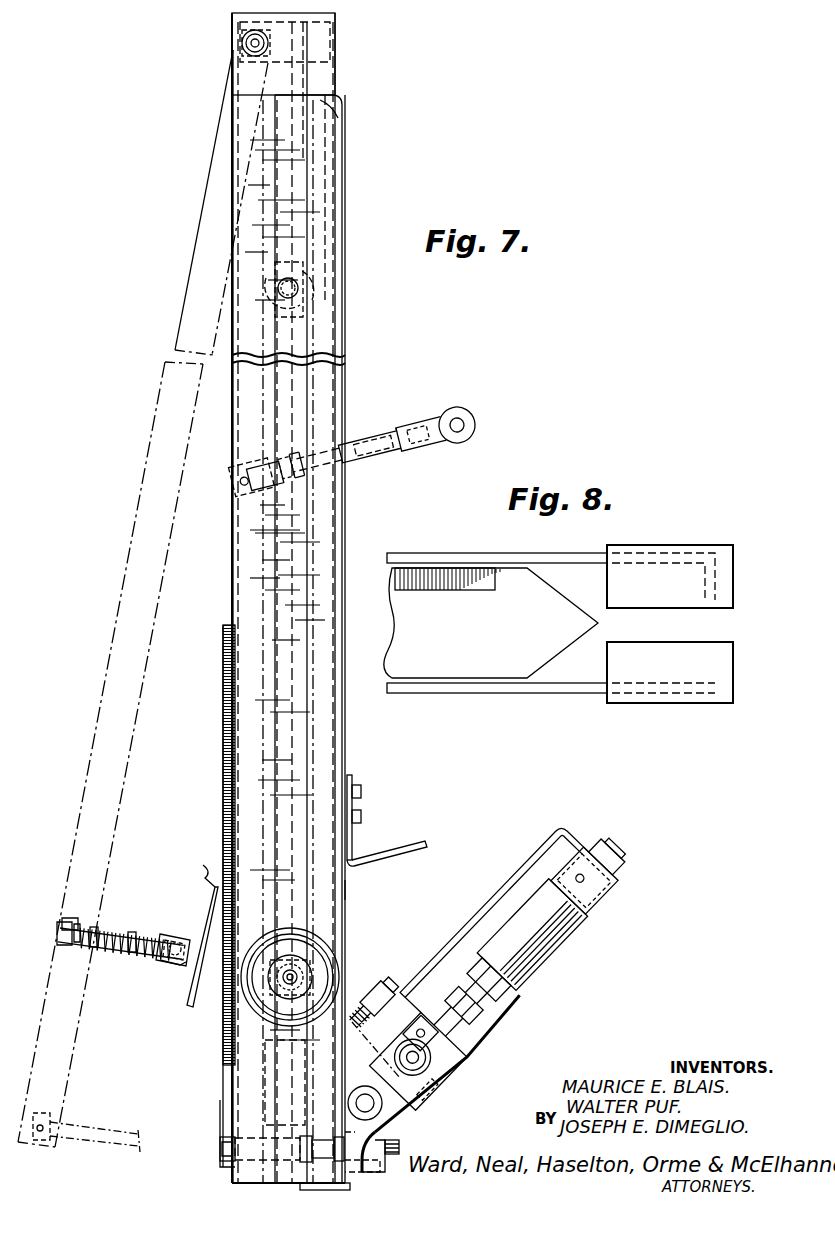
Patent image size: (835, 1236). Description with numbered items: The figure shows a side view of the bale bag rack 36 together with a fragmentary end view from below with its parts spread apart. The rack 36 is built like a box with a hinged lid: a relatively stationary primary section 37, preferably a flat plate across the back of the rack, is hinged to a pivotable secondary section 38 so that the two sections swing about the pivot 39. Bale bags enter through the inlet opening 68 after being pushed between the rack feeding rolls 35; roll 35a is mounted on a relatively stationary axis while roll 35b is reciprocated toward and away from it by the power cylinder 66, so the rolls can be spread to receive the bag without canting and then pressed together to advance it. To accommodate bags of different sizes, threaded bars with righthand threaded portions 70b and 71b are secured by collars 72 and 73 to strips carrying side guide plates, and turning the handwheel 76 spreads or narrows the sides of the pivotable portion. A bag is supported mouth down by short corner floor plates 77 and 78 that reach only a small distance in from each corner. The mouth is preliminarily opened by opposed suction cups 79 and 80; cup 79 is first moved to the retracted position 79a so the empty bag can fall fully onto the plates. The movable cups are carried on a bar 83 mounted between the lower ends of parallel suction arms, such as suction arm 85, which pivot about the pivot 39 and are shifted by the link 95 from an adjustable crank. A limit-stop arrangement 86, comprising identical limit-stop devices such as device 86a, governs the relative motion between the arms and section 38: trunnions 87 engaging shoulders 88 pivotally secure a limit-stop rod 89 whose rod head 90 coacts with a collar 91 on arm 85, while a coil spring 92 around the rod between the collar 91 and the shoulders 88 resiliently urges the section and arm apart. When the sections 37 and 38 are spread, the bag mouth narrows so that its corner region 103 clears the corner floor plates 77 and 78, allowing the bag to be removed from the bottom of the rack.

In FIG. 7, the rack feeding rolls 35 is at (352, 1040).
In FIG. 7, the rack feed roll 35a is at (400, 1108).
In FIG. 7, the rack feed roll 35b is at (455, 1068).
In FIG. 7, the bale bag rack 36 is at (348, 178).
In FIG. 7, the primary section 37 is at (345, 298).
In FIG. 7, the secondary section 38 is at (232, 595).
In FIG. 7, the pivot 39 is at (240, 47).
In FIG. 7, the power cylinder 66 is at (555, 960).
In FIG. 7, the inlet opening 68 is at (338, 1082).
In FIG. 7, the righthand portion of threaded bar 70b is at (284, 981).
In FIG. 7, the righthand portion of threaded bar 71b is at (297, 282).
In FIG. 7, the collar 72 is at (345, 942).
In FIG. 7, the collar 73 is at (305, 304).
In FIG. 7, the handwheel 76 is at (322, 930).
In FIG. 7, the corner floor plate 77 is at (345, 1190).
In FIG. 8, the corner floor plate 77 is at (735, 578).
In FIG. 7, the corner floor plate 78 is at (300, 1186).
In FIG. 8, the corner floor plate 78 is at (735, 665).
In FIG. 7, the suction cup 79 is at (338, 1138).
In FIG. 7, the retracted position 79a is at (300, 1162).
In FIG. 7, the suction cup 80 is at (372, 1139).
In FIG. 7, the bar 83 is at (228, 1140).
In FIG. 7, the suction arm 85 is at (232, 741).
In FIG. 7, the limit-stop arrangement 86 is at (101, 914).
In FIG. 7, the limit-stop device 86a is at (119, 957).
In FIG. 7, the trunnions 87 is at (180, 940).
In FIG. 7, the shoulders 88 is at (182, 964).
In FIG. 7, the limit-stop rod 89 is at (130, 935).
In FIG. 7, the rod head 90 is at (64, 924).
In FIG. 7, the collar 91 is at (60, 940).
In FIG. 7, the coil spring 92 is at (95, 932).
In FIG. 7, the link 95 is at (350, 440).
In FIG. 8, the corner region 103 is at (582, 610).